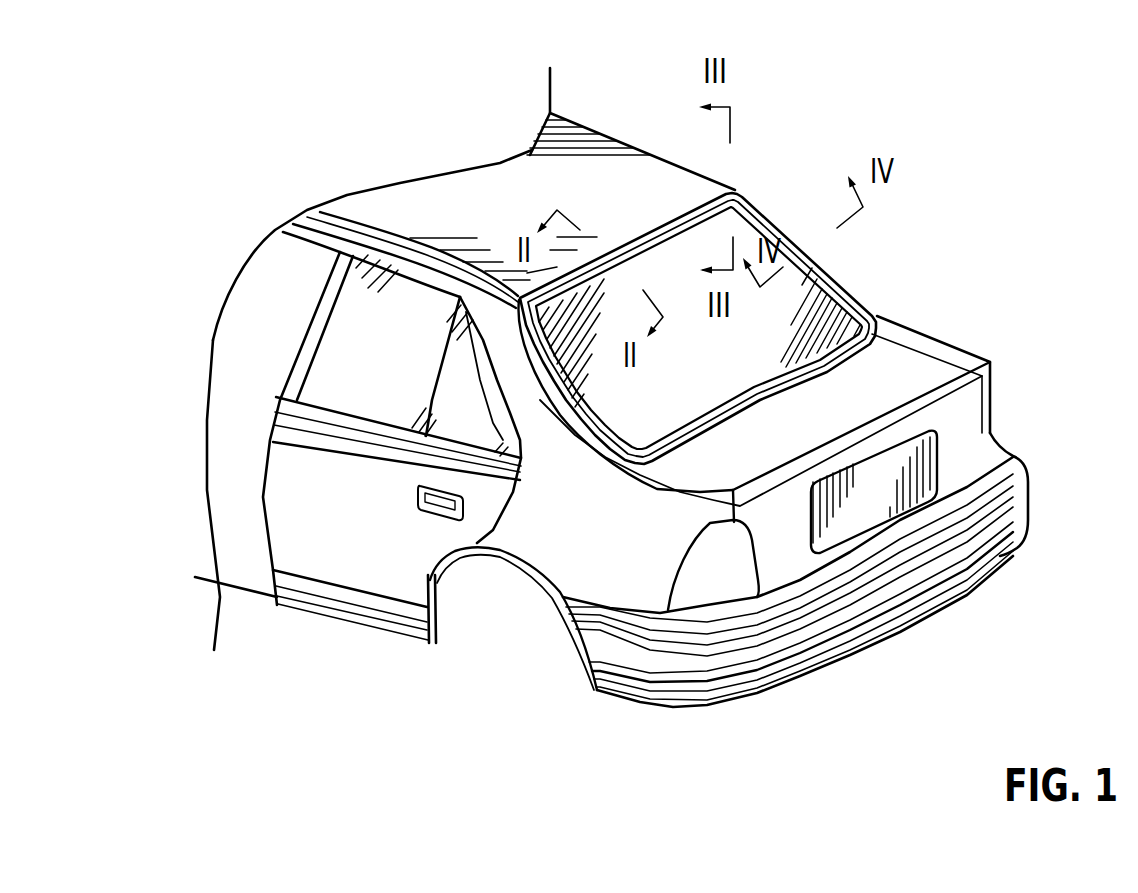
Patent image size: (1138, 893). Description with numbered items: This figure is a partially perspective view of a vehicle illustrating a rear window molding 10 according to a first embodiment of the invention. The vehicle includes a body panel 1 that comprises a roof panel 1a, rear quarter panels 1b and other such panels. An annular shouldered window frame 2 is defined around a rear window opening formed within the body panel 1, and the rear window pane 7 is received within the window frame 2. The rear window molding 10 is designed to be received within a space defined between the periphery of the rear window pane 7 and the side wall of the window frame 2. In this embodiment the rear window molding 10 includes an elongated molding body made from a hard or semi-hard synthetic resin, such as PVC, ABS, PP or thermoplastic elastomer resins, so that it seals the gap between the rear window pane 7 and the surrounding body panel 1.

The body panel 1 is at (319, 463).
The roof panel 1a is at (522, 302).
The rear quarter panels 1b is at (440, 466).
The window frame 2 is at (638, 232).
The rear window pane 7 is at (828, 274).
The rear window molding 10 is at (632, 235).